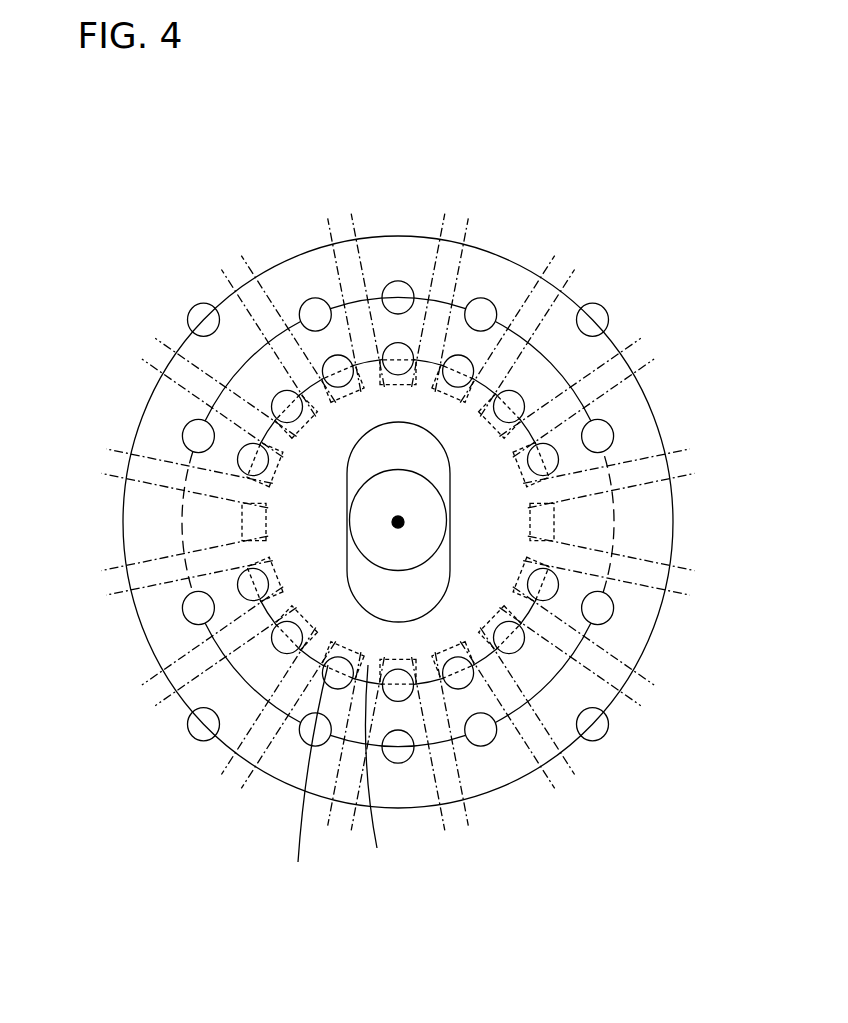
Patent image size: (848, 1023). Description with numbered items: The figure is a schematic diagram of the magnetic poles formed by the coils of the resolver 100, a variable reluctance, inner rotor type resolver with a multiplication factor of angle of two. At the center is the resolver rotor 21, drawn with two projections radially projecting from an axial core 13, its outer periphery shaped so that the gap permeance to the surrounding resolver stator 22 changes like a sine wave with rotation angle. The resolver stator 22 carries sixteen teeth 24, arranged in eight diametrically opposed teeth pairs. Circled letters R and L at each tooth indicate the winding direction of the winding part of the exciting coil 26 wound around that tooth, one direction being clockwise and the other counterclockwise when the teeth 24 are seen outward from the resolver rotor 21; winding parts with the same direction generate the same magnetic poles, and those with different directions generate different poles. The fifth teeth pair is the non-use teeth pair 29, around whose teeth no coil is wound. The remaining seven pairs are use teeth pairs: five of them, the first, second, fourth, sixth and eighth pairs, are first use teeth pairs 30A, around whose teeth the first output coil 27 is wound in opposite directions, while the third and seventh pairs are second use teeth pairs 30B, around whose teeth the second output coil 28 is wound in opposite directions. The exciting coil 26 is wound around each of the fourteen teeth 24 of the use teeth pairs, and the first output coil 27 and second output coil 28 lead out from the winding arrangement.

The resolver 100 is at (302, 110).
The axial core 13 is at (402, 520).
The resolver rotor 21 is at (405, 445).
The resolver stator 22 is at (278, 225).
The teeth 24 is at (394, 522).
The exciting coil 26 is at (382, 672).
The first output coil 27 is at (377, 848).
The second output coil 28 is at (298, 862).
The non-use teeth pair 29 is at (700, 517).
The first use teeth pair 30A is at (400, 200).
The second use teeth pair 30B is at (612, 297).